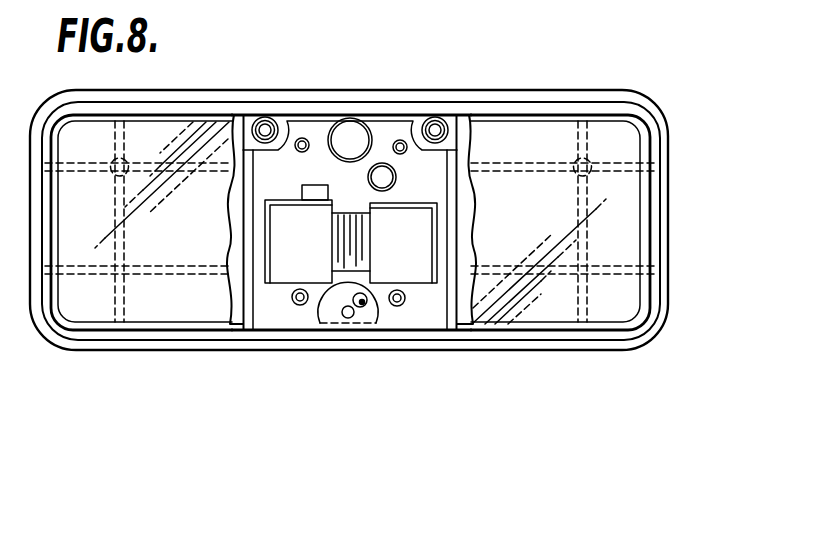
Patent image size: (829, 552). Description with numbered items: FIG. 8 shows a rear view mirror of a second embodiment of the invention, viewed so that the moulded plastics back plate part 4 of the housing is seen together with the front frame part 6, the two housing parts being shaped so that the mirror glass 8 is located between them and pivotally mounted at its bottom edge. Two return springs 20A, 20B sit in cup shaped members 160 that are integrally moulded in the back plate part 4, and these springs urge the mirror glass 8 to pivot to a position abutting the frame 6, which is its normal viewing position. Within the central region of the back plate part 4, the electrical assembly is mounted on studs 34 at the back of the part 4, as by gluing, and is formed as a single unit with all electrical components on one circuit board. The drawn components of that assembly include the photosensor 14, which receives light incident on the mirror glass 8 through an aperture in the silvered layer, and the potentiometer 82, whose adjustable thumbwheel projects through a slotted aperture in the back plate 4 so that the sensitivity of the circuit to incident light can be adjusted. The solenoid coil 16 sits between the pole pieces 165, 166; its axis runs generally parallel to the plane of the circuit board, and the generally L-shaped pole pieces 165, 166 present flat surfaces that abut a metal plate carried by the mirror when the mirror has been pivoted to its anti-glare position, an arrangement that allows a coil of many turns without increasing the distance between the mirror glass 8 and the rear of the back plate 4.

The back plate part 4 is at (592, 102).
The front frame part 6 is at (644, 231).
The mirror glass 8 is at (625, 248).
The photosensor 14 is at (347, 124).
The solenoid coil 16 is at (344, 255).
The return spring 20A is at (272, 113).
The return spring 20B is at (431, 116).
The studs 34 is at (388, 139).
The potentiometer 82 is at (362, 317).
The cup shaped members 160 is at (263, 117).
The L-shaped pole piece 165 is at (274, 268).
The L-shaped pole piece 166 is at (422, 277).